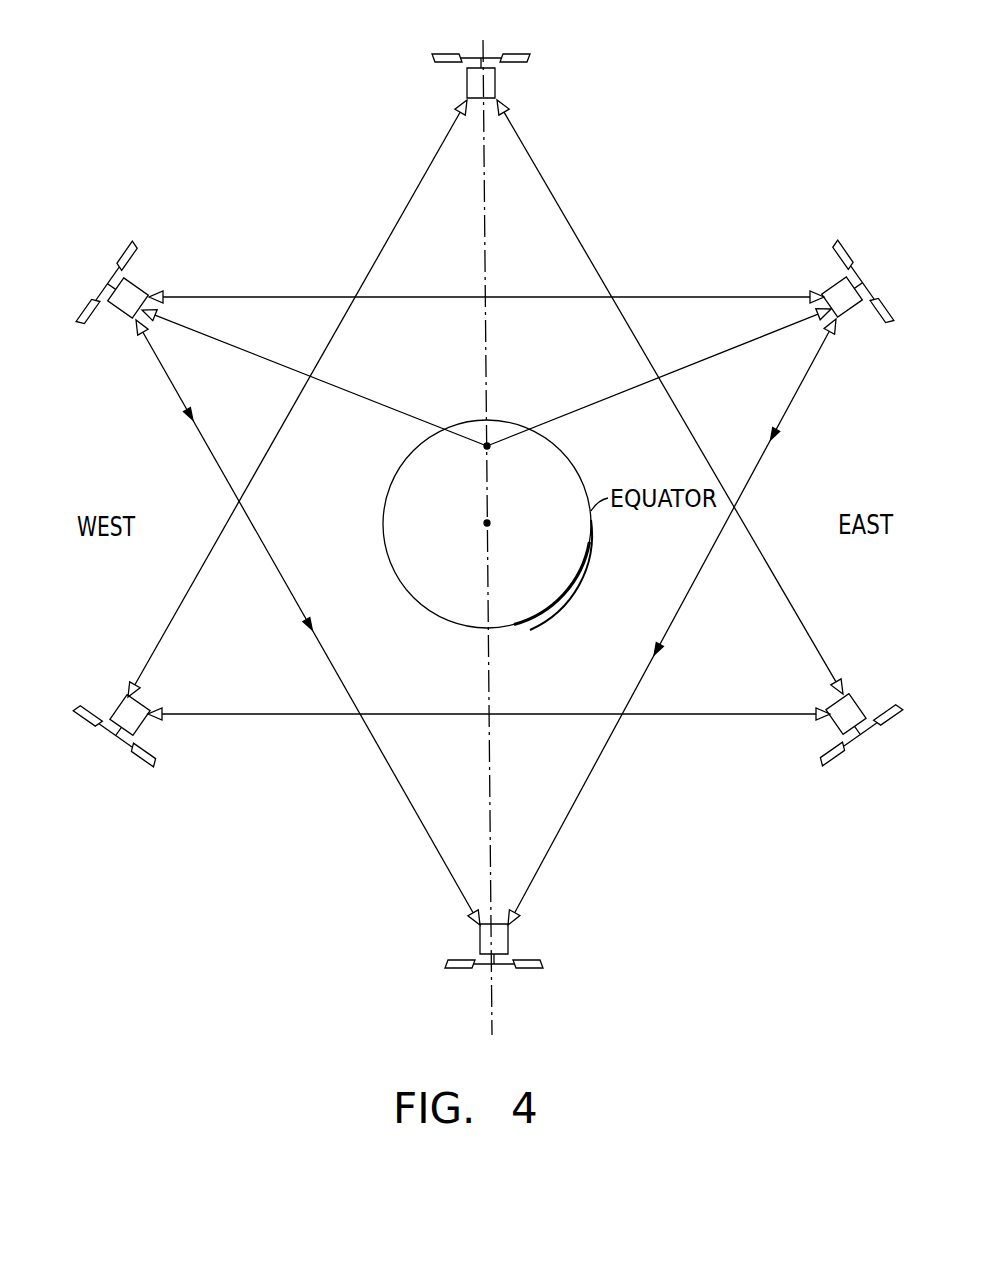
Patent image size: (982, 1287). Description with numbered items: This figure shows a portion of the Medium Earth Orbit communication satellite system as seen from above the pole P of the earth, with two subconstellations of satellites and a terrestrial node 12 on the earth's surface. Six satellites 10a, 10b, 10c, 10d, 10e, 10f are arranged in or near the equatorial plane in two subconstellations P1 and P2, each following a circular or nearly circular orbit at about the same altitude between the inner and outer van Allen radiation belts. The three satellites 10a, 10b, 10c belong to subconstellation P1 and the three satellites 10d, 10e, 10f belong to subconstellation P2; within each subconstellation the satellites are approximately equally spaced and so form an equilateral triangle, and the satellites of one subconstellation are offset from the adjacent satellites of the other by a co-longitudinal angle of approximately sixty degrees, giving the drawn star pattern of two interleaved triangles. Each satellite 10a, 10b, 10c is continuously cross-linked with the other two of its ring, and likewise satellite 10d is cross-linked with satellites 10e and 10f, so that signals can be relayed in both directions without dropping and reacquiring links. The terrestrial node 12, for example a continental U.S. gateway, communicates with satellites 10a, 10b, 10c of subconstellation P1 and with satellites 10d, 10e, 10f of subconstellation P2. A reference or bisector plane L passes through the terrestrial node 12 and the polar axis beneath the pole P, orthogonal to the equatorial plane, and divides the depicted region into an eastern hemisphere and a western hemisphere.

The satellite 10a is at (117, 270).
The satellite 10b is at (855, 276).
The satellite 10c is at (490, 962).
The satellite 10d is at (487, 58).
The satellite 10e is at (857, 733).
The satellite 10f is at (122, 733).
The terrestrial node 12 is at (489, 445).
The pole of the earth P is at (486, 521).
The subconstellation P1 is at (297, 297).
The subconstellation P2 is at (563, 203).
The reference plane L is at (483, 222).